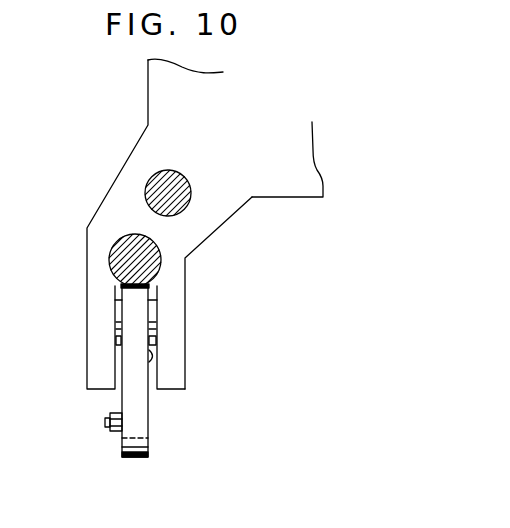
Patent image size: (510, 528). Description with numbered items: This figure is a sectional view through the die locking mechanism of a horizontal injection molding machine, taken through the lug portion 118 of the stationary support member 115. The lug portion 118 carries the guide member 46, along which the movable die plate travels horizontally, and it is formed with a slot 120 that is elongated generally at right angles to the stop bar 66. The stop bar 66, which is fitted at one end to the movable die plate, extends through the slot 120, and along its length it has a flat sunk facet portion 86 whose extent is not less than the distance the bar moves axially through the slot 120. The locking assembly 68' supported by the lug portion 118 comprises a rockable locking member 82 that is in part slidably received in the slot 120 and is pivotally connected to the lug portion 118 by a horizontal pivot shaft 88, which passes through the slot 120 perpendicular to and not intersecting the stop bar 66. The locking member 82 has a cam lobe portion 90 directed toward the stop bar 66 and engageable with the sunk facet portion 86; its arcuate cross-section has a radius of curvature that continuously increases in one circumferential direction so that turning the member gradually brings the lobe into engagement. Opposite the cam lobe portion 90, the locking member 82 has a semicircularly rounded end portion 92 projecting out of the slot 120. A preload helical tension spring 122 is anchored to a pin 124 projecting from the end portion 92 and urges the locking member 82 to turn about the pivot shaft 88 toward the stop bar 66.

The guide member 46 is at (145, 186).
The stop bar 66 is at (114, 243).
The locking assembly 68' is at (262, 346).
The rockable locking member 82 is at (151, 401).
The flat sunk facet portion 86 is at (138, 289).
The pivot shaft 88 is at (118, 347).
The cam lobe portion 90 is at (130, 288).
The rounded end portion 92 is at (138, 455).
The stationary support member 115 is at (304, 202).
The lug portion 118 is at (185, 283).
The slot 120 is at (150, 358).
The preload helical tension spring 122 is at (115, 433).
The pin 124 is at (102, 425).